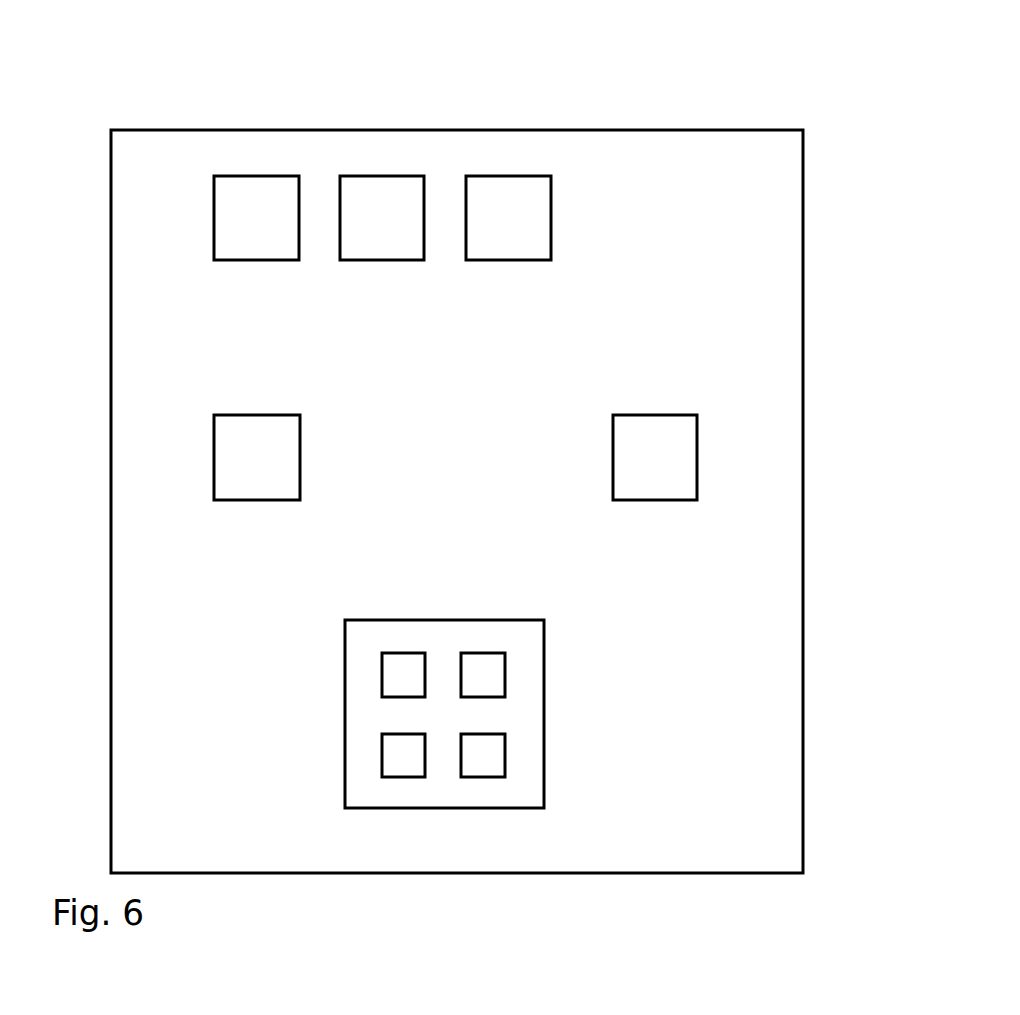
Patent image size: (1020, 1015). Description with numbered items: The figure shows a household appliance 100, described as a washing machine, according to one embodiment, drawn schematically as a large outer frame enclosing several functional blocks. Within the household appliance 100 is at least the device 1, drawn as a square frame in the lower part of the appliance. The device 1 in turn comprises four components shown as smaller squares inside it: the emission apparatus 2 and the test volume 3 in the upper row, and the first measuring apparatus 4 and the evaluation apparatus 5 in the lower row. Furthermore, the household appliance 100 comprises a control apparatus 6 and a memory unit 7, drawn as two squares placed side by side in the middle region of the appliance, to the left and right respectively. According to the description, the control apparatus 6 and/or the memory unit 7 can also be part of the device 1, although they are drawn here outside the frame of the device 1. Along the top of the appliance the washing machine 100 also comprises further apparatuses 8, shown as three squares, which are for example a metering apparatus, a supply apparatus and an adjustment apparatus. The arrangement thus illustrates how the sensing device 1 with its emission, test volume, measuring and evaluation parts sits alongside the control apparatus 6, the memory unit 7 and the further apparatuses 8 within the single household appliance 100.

The household appliance 100 is at (807, 121).
The device 1 is at (528, 697).
The emission apparatus 2 is at (403, 667).
The test volume 3 is at (478, 667).
The first measuring apparatus 4 is at (405, 772).
The evaluation apparatus 5 is at (483, 772).
The control apparatus 6 is at (253, 427).
The memory unit 7 is at (657, 427).
The further apparatuses 8 is at (256, 247).